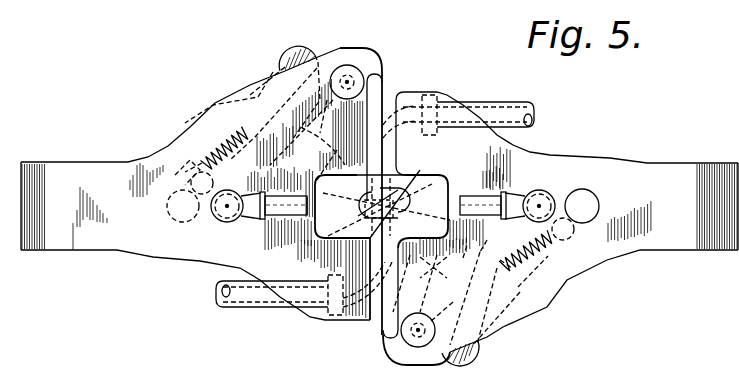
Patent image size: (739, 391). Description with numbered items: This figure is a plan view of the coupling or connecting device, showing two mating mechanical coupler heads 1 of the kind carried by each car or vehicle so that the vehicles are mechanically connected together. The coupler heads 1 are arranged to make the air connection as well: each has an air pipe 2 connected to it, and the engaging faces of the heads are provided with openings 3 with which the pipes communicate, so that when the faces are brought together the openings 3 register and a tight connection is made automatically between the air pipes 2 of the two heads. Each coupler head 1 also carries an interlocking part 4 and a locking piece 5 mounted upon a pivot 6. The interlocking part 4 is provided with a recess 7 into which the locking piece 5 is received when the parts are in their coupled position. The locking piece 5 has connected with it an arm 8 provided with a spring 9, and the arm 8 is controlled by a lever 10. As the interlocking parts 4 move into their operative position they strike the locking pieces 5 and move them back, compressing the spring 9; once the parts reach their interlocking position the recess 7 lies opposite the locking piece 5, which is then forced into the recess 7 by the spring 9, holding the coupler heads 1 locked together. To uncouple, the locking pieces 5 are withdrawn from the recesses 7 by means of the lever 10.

The mechanical coupler head 1 is at (528, 162).
The air pipe 2 is at (515, 103).
The opening 3 is at (402, 199).
The interlocking part 4 is at (361, 199).
The locking piece 5 is at (335, 150).
The pivot 6 is at (348, 82).
The recess 7 is at (360, 198).
The arm 8 is at (277, 68).
The spring 9 is at (212, 135).
The lever 10 is at (246, 224).